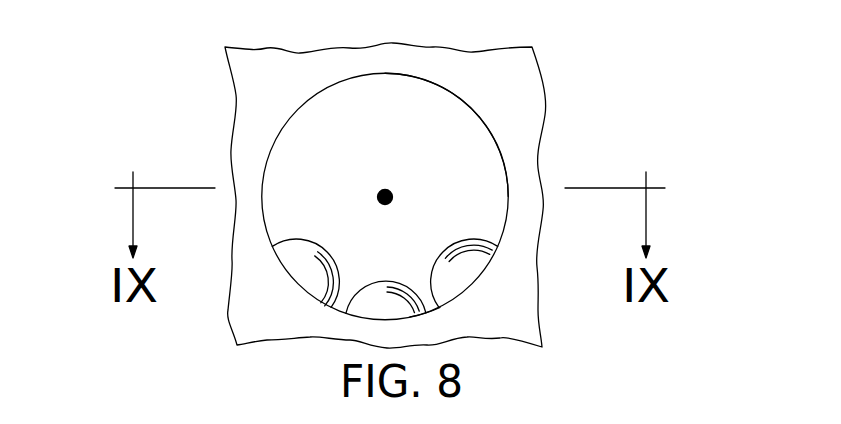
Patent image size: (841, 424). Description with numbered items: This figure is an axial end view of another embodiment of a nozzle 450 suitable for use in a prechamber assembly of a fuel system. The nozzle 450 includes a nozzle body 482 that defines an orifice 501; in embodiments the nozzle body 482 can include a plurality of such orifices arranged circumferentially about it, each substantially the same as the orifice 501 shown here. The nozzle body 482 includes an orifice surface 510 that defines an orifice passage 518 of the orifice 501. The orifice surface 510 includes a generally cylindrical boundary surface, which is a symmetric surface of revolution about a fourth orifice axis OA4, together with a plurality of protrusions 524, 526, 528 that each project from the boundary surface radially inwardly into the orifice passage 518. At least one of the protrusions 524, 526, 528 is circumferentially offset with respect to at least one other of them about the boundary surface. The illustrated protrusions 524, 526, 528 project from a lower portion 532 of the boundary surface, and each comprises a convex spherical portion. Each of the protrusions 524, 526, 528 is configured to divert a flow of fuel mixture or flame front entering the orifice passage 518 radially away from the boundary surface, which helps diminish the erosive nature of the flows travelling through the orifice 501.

The nozzle 450 is at (203, 80).
The nozzle body 482 is at (252, 134).
The orifice passage 518 is at (305, 192).
The orifice surface 510 is at (433, 95).
The orifice 501 is at (500, 148).
The fourth orifice axis OA4 is at (385, 197).
The protrusion 526 is at (305, 270).
The protrusion 524 is at (364, 312).
The lower portion of the boundary surface 532 is at (433, 312).
The protrusion 528 is at (470, 269).